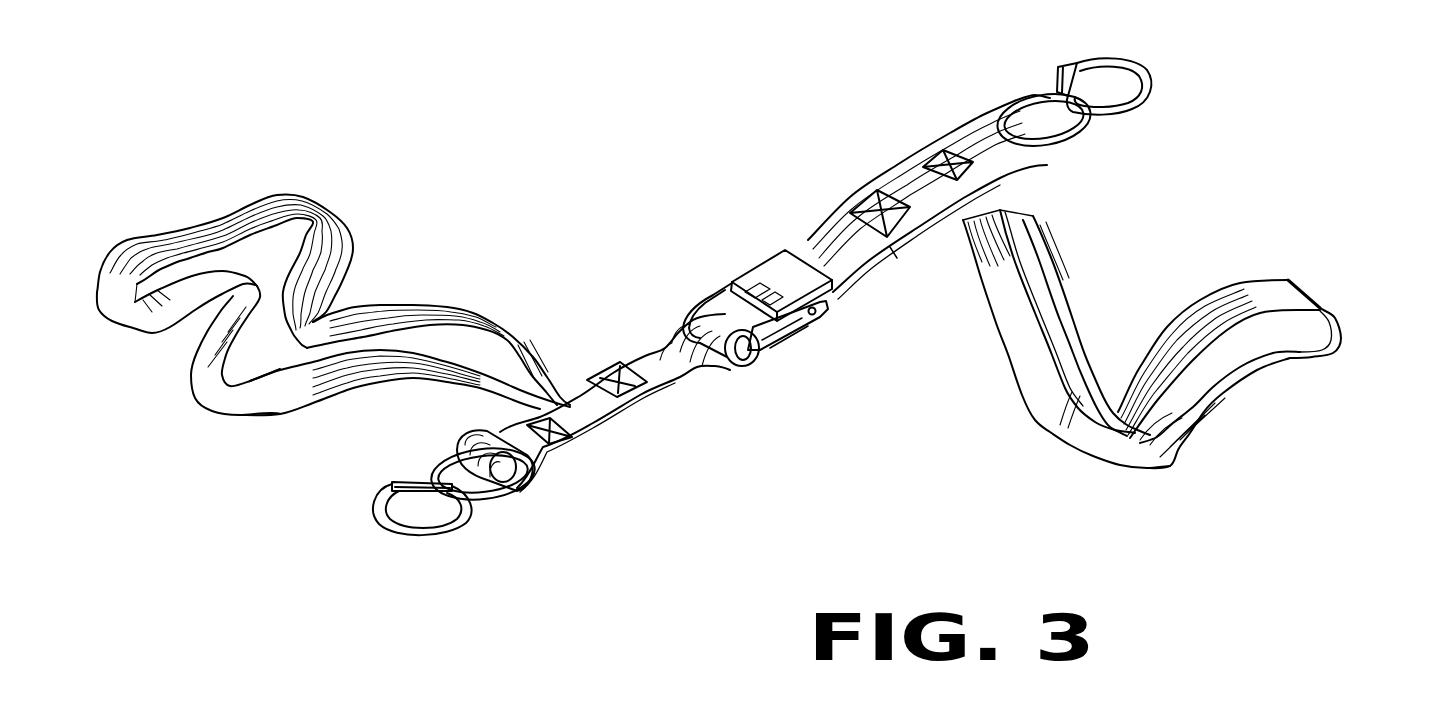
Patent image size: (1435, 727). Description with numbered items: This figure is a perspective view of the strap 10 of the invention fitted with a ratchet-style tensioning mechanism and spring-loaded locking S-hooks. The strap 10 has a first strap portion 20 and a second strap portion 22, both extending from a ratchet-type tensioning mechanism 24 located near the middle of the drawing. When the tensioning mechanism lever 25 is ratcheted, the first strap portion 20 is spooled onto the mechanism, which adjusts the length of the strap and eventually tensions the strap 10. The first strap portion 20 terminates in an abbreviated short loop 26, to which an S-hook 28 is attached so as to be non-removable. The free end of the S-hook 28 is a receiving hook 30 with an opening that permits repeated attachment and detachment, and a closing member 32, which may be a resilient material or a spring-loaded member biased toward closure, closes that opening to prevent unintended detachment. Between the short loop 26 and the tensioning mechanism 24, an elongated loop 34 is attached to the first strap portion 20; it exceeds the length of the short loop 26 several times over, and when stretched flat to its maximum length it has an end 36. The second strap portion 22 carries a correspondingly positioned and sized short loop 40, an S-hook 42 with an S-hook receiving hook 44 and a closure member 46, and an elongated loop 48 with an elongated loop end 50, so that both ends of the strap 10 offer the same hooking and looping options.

The strap 10 is at (764, 329).
The first strap portion 20 is at (665, 347).
The second strap portion 22 is at (838, 226).
The ratchet-type tensioning mechanism 24 is at (780, 343).
The tensioning mechanism lever 25 is at (751, 309).
The short loop 26 is at (537, 463).
The S-hook 28 is at (507, 497).
The receiving hook 30 is at (390, 539).
The closing member 32 is at (417, 478).
The elongated loop 34 is at (423, 303).
The end 36 is at (177, 233).
The short loop 40 is at (1035, 172).
The S-hook 42 is at (1000, 107).
The S-hook receiving hook 44 is at (1055, 66).
The closure member 46 is at (1057, 73).
The elongated loop 48 is at (1167, 470).
The elongated loop end 50 is at (1317, 307).